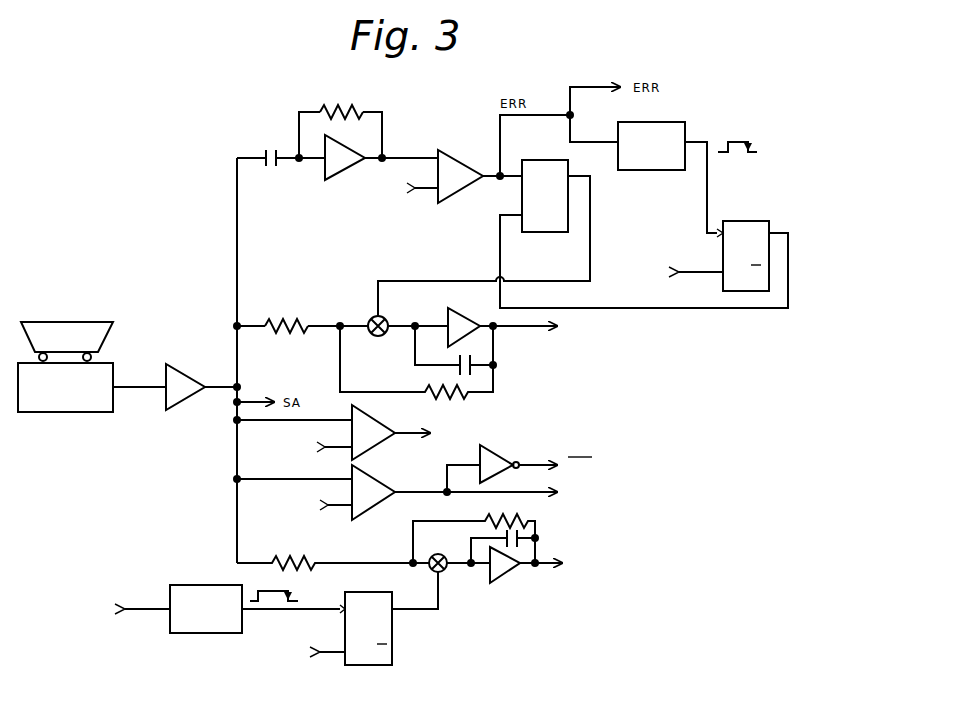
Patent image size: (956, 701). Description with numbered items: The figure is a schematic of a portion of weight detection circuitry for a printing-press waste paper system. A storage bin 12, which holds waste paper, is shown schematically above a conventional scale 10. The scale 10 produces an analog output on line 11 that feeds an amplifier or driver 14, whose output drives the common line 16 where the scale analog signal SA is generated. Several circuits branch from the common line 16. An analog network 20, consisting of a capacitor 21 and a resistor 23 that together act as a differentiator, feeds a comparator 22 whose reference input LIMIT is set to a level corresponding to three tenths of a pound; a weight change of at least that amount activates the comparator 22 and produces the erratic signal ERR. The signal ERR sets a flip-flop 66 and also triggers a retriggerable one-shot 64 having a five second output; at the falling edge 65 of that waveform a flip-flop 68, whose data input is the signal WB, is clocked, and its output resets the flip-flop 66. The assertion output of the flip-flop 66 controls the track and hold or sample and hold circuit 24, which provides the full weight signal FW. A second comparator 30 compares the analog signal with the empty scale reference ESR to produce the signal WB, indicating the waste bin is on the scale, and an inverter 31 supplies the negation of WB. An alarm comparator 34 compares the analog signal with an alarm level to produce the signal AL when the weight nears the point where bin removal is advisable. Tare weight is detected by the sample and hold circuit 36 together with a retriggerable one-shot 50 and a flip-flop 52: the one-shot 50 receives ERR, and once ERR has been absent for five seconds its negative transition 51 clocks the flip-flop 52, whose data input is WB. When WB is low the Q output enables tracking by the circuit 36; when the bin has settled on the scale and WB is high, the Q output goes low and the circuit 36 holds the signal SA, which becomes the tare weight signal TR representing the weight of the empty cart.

The scale 10 is at (66, 412).
The line 11 is at (149, 388).
The storage bin 12 is at (101, 322).
The amplifier or driver 14 is at (190, 381).
The common line 16 is at (237, 253).
The analog network 20 is at (331, 130).
The capacitor 21 is at (266, 148).
The comparator 22 is at (478, 162).
The resistor 23 is at (364, 112).
The sample and hold circuit 24 is at (410, 349).
The comparator 30 is at (380, 476).
The inverter 31 is at (492, 451).
The alarm comparator 34 is at (380, 416).
The sample and hold circuit 36 is at (432, 575).
The one-shot 50 is at (208, 585).
The negative transition 51 is at (294, 596).
The flip-flop 52 is at (378, 592).
The one-shot 64 is at (687, 130).
The falling edge 65 is at (744, 142).
The flip-flop 66 is at (540, 232).
The flip-flop 68 is at (720, 283).